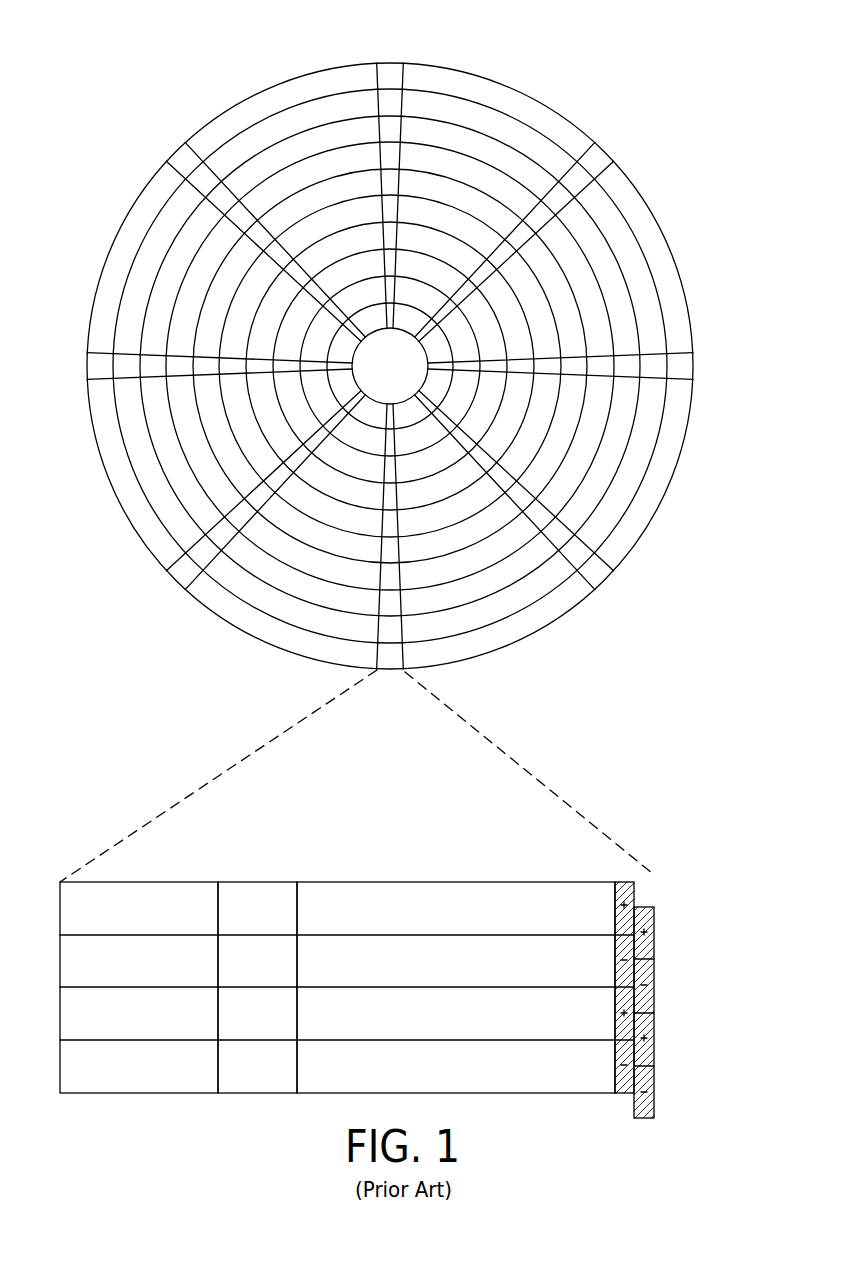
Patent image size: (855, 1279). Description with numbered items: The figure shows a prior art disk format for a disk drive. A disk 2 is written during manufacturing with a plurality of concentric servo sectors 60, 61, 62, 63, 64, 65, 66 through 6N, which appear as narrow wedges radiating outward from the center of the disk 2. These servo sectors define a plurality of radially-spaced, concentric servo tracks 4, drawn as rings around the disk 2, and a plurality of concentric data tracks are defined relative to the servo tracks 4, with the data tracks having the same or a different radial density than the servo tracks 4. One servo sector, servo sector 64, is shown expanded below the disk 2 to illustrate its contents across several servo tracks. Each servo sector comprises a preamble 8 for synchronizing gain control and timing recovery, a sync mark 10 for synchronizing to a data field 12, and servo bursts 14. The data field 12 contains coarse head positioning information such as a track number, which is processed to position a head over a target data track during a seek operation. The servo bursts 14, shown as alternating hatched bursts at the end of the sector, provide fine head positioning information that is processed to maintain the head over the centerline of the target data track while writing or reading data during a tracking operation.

The disk 2 is at (168, 68).
The servo tracks 4 is at (493, 127).
The servo sector 60 is at (392, 72).
The servo sector 61 is at (600, 158).
The servo sector 62 is at (687, 370).
The servo sector 63 is at (597, 575).
The servo sector 64 is at (257, 740).
The servo sector 65 is at (180, 577).
The servo sector 66 is at (92, 363).
The servo sector 6N is at (180, 157).
The preamble 8 is at (146, 880).
The sync mark 10 is at (262, 880).
The data field 12 is at (444, 880).
The servo bursts 14 is at (650, 880).